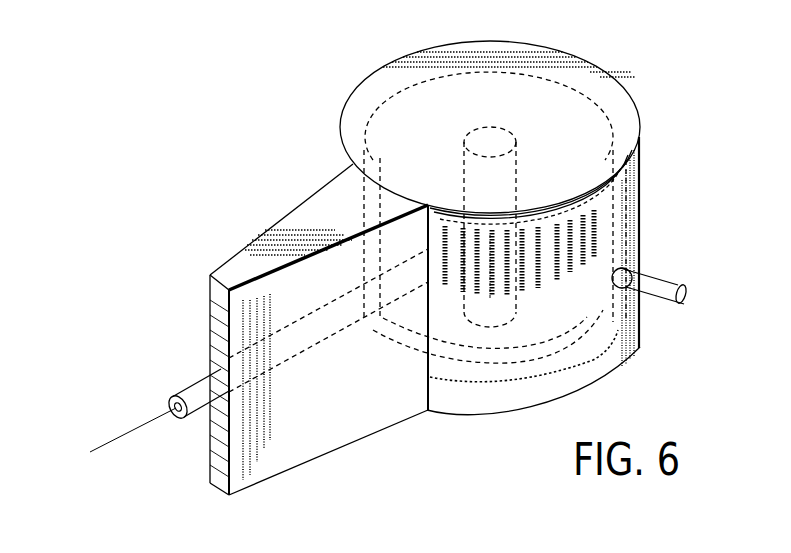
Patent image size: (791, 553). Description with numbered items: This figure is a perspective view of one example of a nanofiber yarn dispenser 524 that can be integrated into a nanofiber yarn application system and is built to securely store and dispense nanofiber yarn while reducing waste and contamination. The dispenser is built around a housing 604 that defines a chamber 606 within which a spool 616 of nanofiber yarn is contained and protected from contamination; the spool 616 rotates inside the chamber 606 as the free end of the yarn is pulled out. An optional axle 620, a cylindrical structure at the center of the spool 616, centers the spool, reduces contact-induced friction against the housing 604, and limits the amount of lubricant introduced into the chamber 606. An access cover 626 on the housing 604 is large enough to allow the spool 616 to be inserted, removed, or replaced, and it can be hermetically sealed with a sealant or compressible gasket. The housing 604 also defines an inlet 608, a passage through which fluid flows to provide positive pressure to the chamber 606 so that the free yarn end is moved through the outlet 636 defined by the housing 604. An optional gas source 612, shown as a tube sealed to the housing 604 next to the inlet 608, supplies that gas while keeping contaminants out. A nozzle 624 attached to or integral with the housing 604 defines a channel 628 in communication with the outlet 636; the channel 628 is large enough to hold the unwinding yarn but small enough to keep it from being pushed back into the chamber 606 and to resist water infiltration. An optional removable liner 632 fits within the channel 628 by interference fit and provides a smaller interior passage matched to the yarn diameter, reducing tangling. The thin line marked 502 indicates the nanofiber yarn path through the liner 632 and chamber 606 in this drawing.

The light beam 502 is at (126, 432).
The nanofiber yarn dispenser 524 is at (118, 226).
The housing 604 is at (640, 344).
The chamber 606 is at (645, 202).
The inlet 608 is at (640, 270).
The gas source 612 is at (676, 282).
The spool 616 is at (410, 103).
The axle 620 is at (527, 142).
The nozzle 624 is at (284, 226).
The access cover 626 is at (340, 140).
The channel 628 is at (330, 347).
The liner 632 is at (190, 390).
The outlet 636 is at (430, 203).